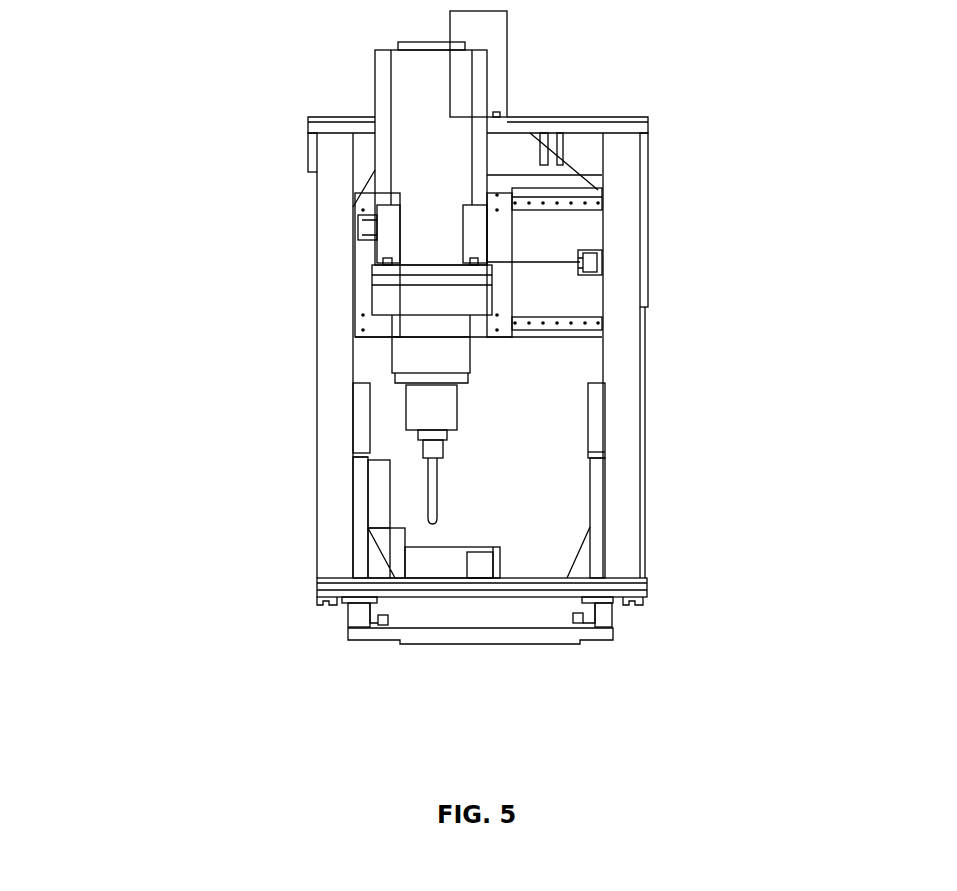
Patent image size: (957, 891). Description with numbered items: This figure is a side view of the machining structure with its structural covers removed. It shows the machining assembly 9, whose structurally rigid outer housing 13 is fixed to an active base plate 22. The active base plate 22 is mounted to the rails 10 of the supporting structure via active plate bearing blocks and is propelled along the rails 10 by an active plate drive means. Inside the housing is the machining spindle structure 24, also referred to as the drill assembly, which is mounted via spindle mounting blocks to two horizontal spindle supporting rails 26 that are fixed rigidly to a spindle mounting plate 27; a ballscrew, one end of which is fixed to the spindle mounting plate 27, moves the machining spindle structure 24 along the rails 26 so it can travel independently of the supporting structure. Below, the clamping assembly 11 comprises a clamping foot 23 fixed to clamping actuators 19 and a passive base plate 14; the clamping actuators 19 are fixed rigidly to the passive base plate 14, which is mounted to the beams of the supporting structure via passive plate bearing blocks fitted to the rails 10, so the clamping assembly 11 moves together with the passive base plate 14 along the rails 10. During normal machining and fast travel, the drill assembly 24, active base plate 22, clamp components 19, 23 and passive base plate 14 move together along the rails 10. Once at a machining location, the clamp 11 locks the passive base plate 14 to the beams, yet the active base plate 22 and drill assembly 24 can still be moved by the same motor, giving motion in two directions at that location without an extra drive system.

The machining assembly 9 is at (242, 115).
The machining spindle structure 24 is at (433, 193).
The outer housing 13 is at (622, 182).
The spindle supporting rails 26 is at (582, 320).
The spindle mounting plate 27 is at (500, 287).
The clamping actuators 19 is at (360, 503).
The active base plate 22 is at (355, 575).
The clamping assembly 11 is at (309, 616).
The rails 10 is at (605, 608).
The passive base plate 14 is at (435, 588).
The clamping foot 23 is at (448, 635).